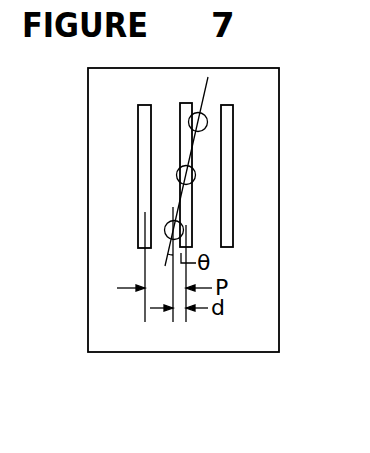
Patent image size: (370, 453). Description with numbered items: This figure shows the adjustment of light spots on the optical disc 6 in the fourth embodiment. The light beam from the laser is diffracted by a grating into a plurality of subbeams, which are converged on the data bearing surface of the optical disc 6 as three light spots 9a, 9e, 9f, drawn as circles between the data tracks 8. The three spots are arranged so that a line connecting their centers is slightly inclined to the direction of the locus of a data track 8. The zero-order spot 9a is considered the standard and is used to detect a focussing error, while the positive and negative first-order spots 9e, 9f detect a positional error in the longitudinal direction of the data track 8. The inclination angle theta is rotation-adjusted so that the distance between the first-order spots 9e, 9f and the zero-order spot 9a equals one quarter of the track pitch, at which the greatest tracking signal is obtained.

The optical disc 6 is at (318, 153).
The data track 8 is at (180, 122).
The light spot 9f is at (204, 113).
The light spot 9a is at (195, 177).
The light spot 9e is at (166, 238).